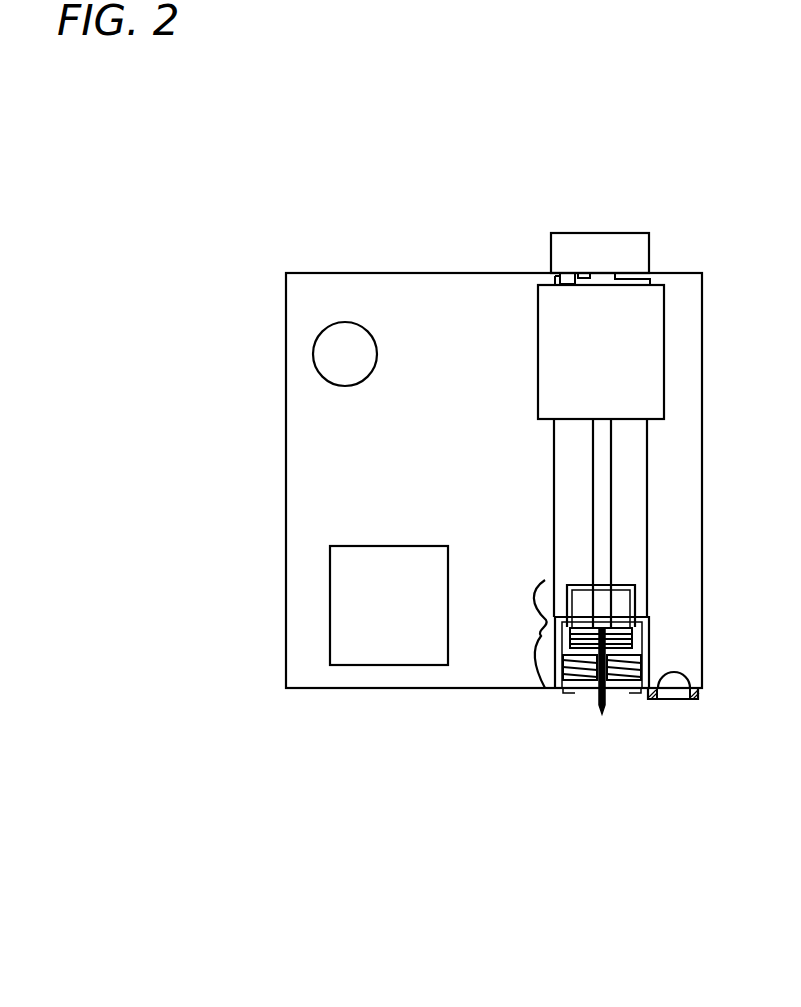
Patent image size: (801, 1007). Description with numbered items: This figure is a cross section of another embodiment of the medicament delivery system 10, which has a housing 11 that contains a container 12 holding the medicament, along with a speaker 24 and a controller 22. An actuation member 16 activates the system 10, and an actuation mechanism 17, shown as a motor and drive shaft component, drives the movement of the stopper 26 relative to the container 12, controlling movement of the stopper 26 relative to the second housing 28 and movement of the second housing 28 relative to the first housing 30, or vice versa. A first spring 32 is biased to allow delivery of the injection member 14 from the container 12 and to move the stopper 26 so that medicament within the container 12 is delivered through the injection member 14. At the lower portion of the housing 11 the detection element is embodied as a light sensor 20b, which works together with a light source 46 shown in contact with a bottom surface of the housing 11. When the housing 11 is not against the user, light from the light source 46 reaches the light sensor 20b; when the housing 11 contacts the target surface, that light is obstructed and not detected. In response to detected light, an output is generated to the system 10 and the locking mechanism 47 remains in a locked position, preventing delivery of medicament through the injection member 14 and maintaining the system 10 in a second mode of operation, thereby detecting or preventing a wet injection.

The medicament delivery system 10 is at (453, 147).
The housing 11 is at (458, 272).
The container 12 is at (540, 637).
The injection member 14 is at (603, 705).
The actuation member 16 is at (637, 242).
The actuation mechanism 17 is at (645, 370).
The light sensor 20b is at (700, 700).
The controller 22 is at (358, 582).
The speaker 24 is at (337, 355).
The stopper 26 is at (633, 630).
The second housing 28 is at (636, 594).
The first housing 30 is at (643, 665).
The first spring 32 is at (587, 672).
The light source 46 is at (675, 692).
The locking mechanism 47 is at (560, 272).